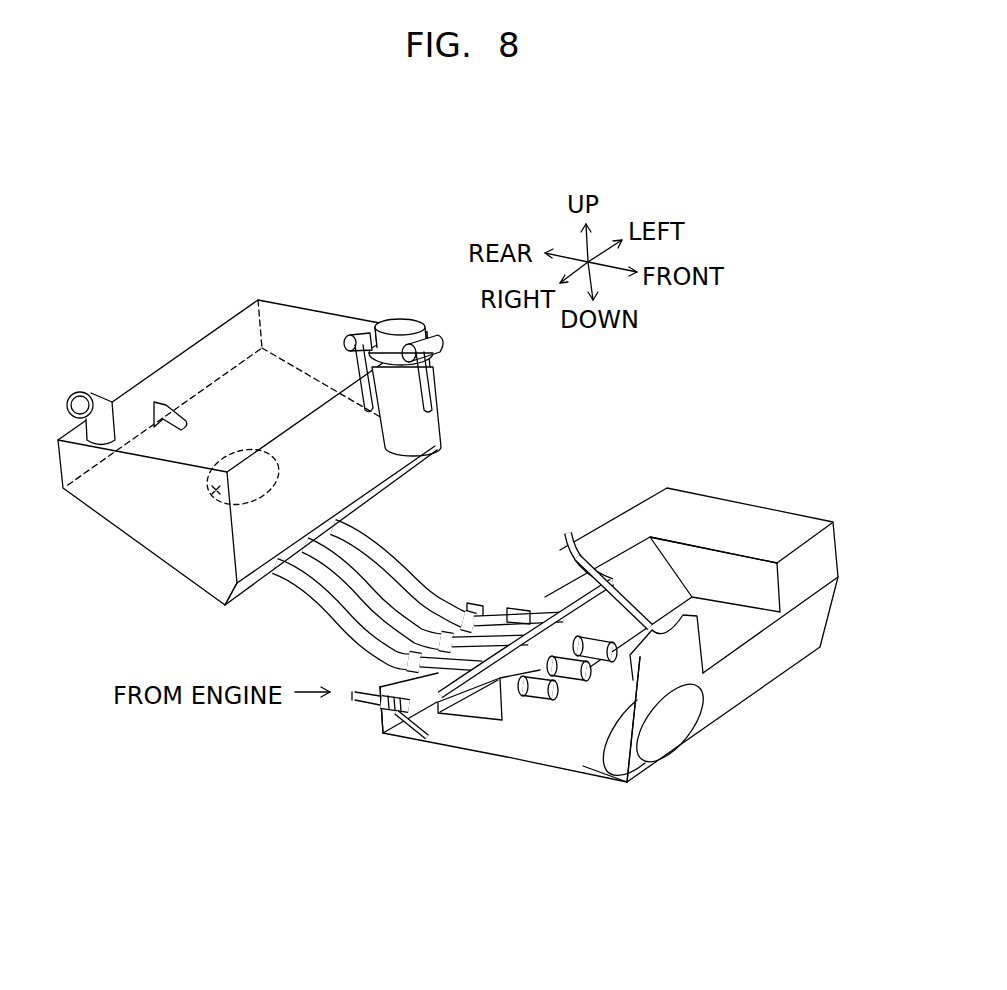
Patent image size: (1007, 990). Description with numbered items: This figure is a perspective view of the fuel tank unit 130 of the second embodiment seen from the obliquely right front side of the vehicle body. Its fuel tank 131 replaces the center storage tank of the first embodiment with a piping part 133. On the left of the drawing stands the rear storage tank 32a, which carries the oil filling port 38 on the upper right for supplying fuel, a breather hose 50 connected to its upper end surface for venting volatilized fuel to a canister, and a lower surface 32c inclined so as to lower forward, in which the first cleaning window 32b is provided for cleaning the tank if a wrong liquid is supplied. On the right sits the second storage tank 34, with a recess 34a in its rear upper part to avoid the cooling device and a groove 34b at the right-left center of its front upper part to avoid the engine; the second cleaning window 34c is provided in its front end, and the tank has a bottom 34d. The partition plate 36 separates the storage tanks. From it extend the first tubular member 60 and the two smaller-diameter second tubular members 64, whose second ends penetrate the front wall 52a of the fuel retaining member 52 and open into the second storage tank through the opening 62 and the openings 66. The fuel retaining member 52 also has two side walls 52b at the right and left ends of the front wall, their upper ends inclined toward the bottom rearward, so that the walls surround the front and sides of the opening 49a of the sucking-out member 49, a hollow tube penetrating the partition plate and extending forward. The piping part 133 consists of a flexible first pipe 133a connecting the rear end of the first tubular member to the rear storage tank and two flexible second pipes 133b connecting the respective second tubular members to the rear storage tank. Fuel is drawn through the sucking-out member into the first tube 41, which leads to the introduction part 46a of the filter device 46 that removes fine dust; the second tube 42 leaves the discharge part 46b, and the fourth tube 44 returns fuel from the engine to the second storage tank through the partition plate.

The rear storage tank 32a is at (192, 584).
The first cleaning window 32b is at (214, 493).
The lower surface 32c is at (221, 610).
The second storage tank 34 is at (757, 697).
The recess 34a is at (568, 540).
The groove 34b is at (722, 575).
The second cleaning window 34c is at (668, 745).
The bottom 34d is at (604, 760).
The partition plate 36 is at (393, 683).
The oil filling port 38 is at (79, 392).
The first tube 41 is at (432, 386).
The second tube 42 is at (362, 372).
The fourth tube 44 is at (365, 705).
The filter device 46 is at (400, 318).
The introduction part 46a is at (436, 334).
The discharge part 46b is at (348, 336).
The sucking-out member 49 is at (530, 612).
The opening 49a is at (637, 613).
The breather hose 50 is at (180, 403).
The fuel retaining member 52 is at (525, 792).
The front wall 52a is at (503, 717).
The side walls 52b is at (462, 705).
The first tubular member 60 is at (578, 770).
The opening 62 is at (543, 698).
The second tubular member 64 is at (642, 645).
The opening 66 is at (583, 678).
The fuel tank unit 130 is at (745, 340).
The fuel tank 131 is at (705, 460).
The piping part 133 is at (485, 497).
The first pipe 133a is at (327, 600).
The second pipes 133b is at (373, 600).